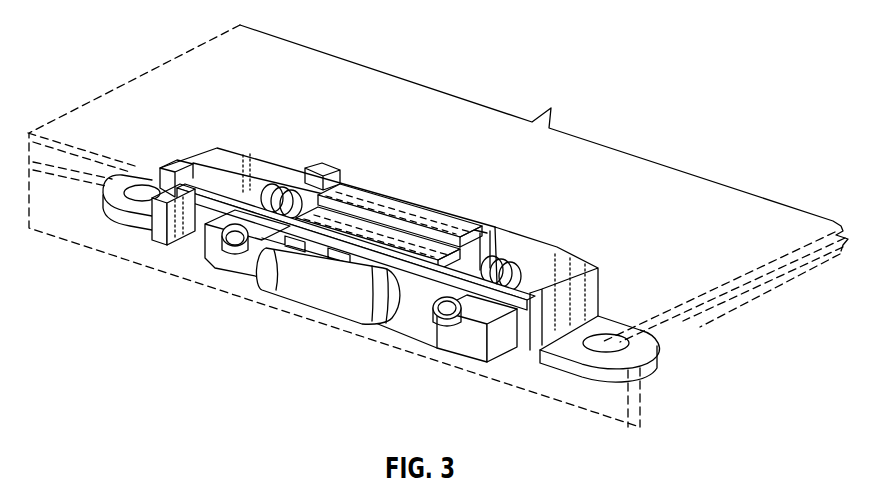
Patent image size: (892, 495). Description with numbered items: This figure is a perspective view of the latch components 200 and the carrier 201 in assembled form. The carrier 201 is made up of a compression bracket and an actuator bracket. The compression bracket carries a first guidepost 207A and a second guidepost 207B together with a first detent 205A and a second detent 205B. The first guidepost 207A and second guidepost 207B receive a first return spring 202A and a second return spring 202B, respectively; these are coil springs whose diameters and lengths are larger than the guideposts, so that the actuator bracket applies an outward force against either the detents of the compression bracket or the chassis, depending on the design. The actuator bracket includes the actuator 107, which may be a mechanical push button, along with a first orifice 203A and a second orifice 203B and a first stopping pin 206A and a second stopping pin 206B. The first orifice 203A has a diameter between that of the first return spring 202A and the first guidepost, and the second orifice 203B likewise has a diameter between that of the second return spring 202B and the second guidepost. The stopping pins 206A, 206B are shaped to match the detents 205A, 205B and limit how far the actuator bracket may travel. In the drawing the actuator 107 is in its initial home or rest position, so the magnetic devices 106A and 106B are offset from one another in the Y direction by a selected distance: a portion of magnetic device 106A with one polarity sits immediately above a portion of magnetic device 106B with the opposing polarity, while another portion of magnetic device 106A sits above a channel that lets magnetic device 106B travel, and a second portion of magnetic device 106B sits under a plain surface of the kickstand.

The latch components 200 is at (588, 33).
The carrier 201 is at (572, 368).
The first return spring 202A is at (300, 182).
The second return spring 202B is at (502, 253).
The first orifice 203A is at (222, 218).
The second orifice 203B is at (433, 292).
The first detent 205A is at (157, 182).
The second detent 205B is at (585, 262).
The first stopping pin 206A is at (200, 164).
The second stopping pin 206B is at (525, 283).
The first guidepost 207A is at (225, 262).
The second guidepost 207B is at (440, 322).
The magnetic device 106A is at (393, 197).
The magnetic device 106B is at (337, 214).
The actuator 107 is at (307, 287).